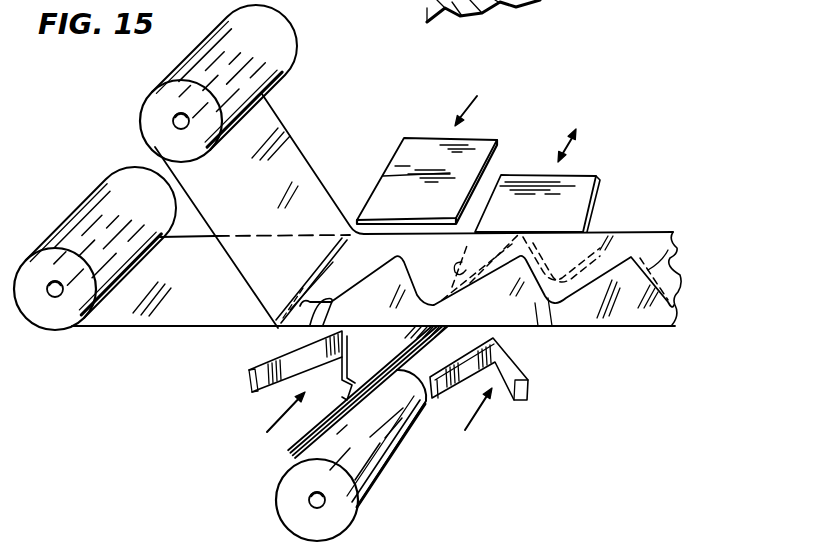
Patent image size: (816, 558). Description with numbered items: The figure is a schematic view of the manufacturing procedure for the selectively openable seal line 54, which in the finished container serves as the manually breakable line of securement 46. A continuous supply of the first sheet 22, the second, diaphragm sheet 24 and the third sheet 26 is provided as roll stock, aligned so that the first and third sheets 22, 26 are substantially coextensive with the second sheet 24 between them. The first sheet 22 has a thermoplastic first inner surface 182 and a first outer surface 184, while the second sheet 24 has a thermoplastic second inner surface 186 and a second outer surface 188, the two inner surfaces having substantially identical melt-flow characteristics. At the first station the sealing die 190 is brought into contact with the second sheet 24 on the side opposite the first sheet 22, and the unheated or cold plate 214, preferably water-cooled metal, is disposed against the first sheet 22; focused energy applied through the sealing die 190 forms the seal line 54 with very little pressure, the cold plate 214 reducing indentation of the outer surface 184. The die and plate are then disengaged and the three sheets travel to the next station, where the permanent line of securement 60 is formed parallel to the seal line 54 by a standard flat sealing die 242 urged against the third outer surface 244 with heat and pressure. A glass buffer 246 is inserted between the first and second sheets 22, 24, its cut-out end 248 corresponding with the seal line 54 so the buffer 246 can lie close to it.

The first sheet 22 is at (265, 104).
The second, diaphragm sheet 24 is at (102, 320).
The third sheet 26 is at (388, 468).
The manually breakable line of securement 46 is at (308, 329).
The selectively openable seal line 54 is at (316, 336).
The permanent line of securement 60 is at (549, 326).
The first inner surface 182 is at (198, 214).
The first outer surface 184 is at (290, 156).
The second inner surface 186 is at (172, 317).
The second outer surface 188 is at (210, 330).
The sealing die 190 is at (276, 394).
The unheated or cold plate 214 is at (428, 138).
The standard flat sealing die 242 is at (503, 395).
The third outer surface 244 is at (405, 352).
The glass buffer 246 is at (582, 183).
The cut-out end 248 is at (546, 274).